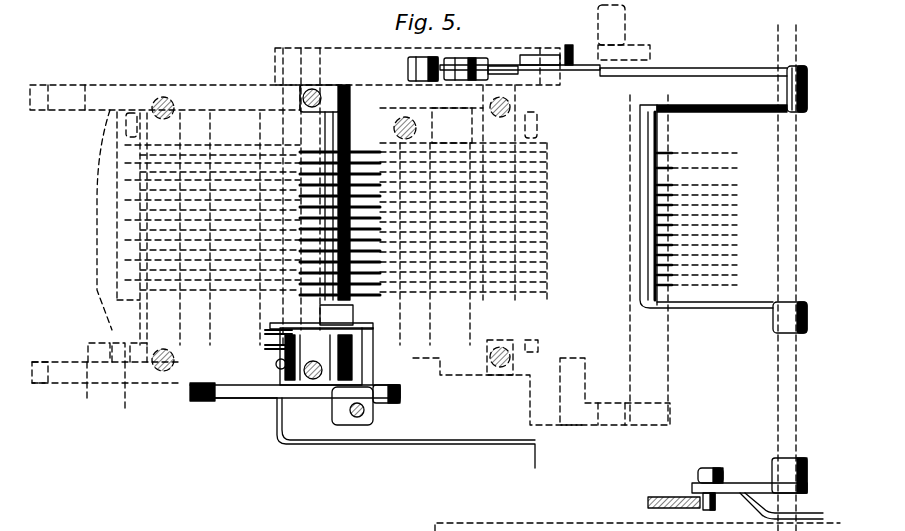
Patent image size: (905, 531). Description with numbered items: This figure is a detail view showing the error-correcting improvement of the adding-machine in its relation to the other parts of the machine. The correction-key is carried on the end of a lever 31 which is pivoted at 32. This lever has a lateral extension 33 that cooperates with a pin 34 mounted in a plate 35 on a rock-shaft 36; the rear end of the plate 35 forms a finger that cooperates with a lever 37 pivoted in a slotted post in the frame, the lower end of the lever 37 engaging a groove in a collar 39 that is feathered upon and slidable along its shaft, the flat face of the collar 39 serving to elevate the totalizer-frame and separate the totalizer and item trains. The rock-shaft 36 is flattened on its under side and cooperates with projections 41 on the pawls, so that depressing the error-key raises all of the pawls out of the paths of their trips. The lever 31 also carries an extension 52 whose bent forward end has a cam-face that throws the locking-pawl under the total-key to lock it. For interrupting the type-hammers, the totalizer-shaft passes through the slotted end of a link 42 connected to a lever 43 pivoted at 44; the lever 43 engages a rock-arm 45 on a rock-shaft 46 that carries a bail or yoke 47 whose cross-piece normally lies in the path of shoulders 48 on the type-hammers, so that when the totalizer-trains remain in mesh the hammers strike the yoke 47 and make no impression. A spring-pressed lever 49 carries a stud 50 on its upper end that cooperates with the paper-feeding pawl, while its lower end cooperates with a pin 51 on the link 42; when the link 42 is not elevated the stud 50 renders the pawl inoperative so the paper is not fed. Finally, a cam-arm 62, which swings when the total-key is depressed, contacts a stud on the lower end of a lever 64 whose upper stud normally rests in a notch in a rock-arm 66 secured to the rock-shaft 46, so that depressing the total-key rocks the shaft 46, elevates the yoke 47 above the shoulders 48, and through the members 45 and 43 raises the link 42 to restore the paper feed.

The lever 31 is at (245, 396).
The pivot 32 is at (205, 402).
The lateral extension 33 is at (375, 342).
The pin 34 is at (425, 328).
The plate 35 is at (285, 322).
The rock-shaft 36 is at (330, 355).
The lever 37 is at (282, 330).
The collar 39 is at (272, 345).
The projections 41 is at (352, 202).
The link 42 is at (505, 62).
The lever 43 is at (576, 70).
The pivot 44 is at (412, 70).
The rock-arm 45 is at (702, 70).
The rock-shaft 46 is at (774, 378).
The bail or yoke 47 is at (648, 298).
The shoulders 48 is at (666, 272).
The spring-pressed lever 49 is at (515, 68).
The stud 50 is at (570, 48).
The pin 51 is at (450, 60).
The extension 52 is at (425, 446).
The cam-arm 62 is at (663, 488).
The lever 64 is at (702, 478).
The rock-arm 66 is at (755, 486).